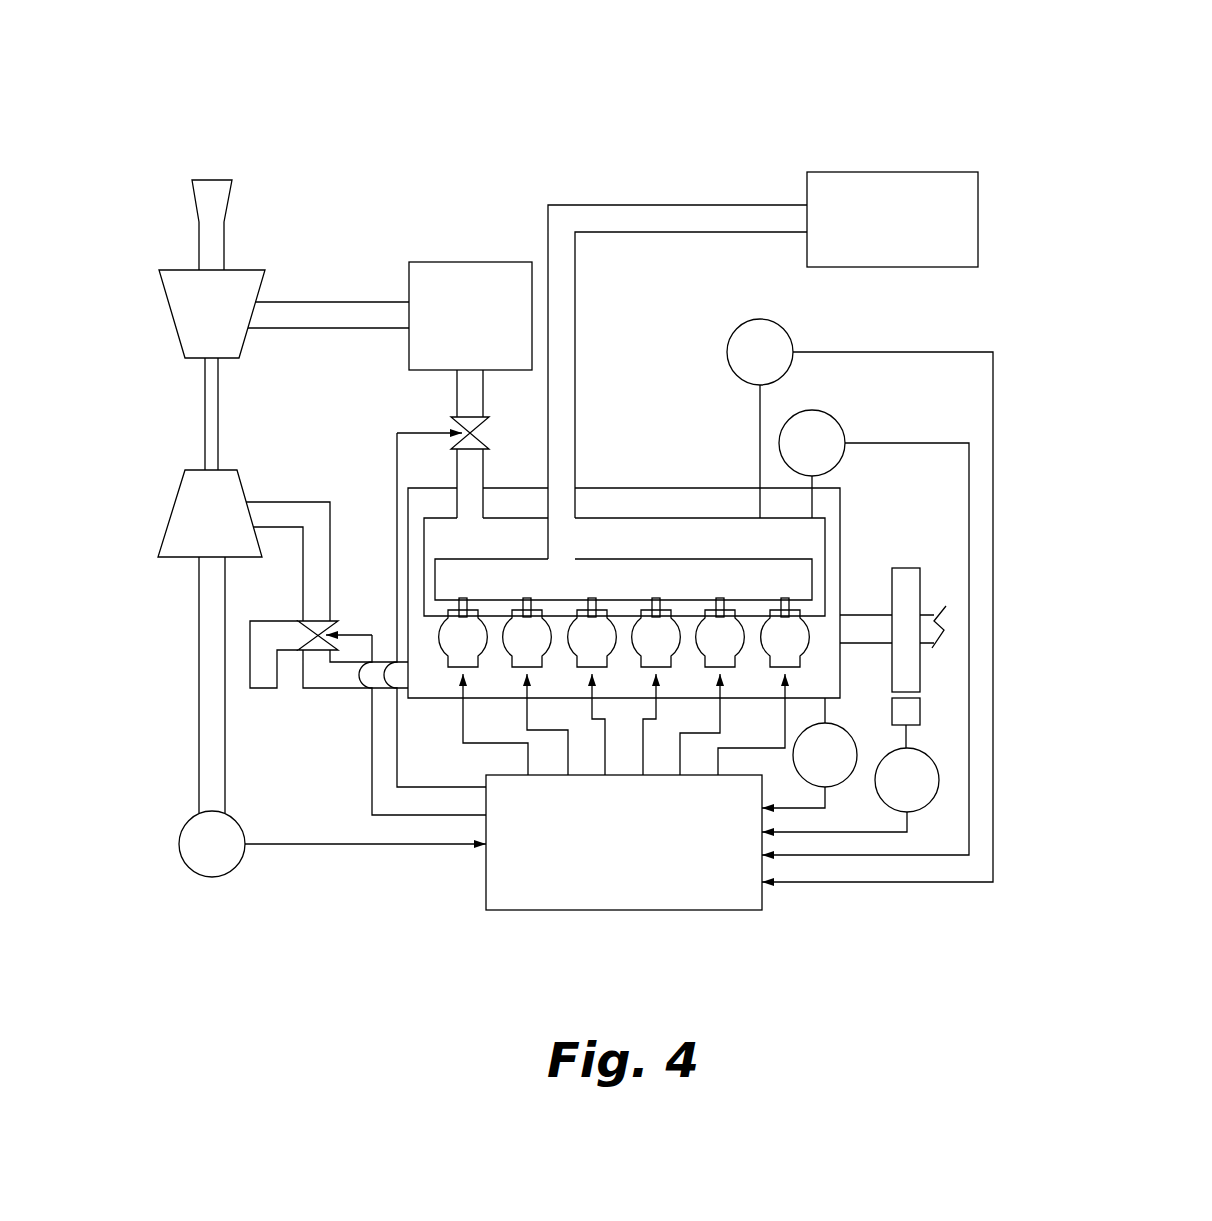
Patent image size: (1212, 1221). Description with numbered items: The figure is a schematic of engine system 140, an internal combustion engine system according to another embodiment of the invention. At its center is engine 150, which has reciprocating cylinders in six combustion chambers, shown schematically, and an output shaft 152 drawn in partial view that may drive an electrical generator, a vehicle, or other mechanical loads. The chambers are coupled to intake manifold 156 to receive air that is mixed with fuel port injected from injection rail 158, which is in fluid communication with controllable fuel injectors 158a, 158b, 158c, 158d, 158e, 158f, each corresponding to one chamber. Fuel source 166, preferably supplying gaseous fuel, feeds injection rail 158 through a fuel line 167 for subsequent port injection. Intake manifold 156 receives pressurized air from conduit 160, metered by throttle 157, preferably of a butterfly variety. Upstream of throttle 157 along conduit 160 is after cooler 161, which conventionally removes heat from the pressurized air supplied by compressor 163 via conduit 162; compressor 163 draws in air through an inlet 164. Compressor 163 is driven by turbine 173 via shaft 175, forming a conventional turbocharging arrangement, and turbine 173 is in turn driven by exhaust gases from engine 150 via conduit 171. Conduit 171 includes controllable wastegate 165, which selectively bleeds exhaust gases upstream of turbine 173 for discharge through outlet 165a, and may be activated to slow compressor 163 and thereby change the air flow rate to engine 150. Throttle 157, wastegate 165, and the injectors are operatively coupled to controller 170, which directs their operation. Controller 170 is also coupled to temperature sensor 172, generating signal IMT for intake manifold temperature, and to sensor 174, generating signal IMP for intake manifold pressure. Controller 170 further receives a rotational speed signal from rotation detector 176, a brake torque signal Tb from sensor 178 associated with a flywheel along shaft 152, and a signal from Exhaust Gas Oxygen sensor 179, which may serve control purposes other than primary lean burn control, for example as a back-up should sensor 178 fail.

The engine system 140 is at (916, 55).
The engine 150 is at (624, 593).
The output shaft 152 is at (937, 612).
The intake manifold 156 is at (624, 567).
The throttle 157 is at (452, 424).
The injection rail 158 is at (623, 579).
The fuel injector 158a is at (457, 600).
The fuel injector 158b is at (521, 600).
The fuel injector 158c is at (586, 600).
The fuel injector 158d is at (650, 600).
The fuel injector 158e is at (714, 600).
The fuel injector 158f is at (779, 600).
The conduit 160 is at (486, 470).
The after cooler 161 is at (470, 316).
The conduit 162 is at (368, 300).
The compressor 163 is at (212, 314).
The air inlet 164 is at (203, 178).
The wastegate 165 is at (340, 620).
The outlet 165a is at (278, 689).
The fuel source 166 is at (892, 219).
The fuel supply line 167 is at (660, 204).
The controller 170 is at (624, 842).
The conduit 171 is at (312, 500).
The temperature sensor 172 is at (752, 321).
The turbine 173 is at (210, 641).
The sensor 174 is at (838, 418).
The shaft 175 is at (205, 416).
The rotation detector 176 is at (856, 774).
The sensor 178 is at (936, 748).
The Exhaust Gas Oxygen (EGO) sensor 179 is at (238, 868).